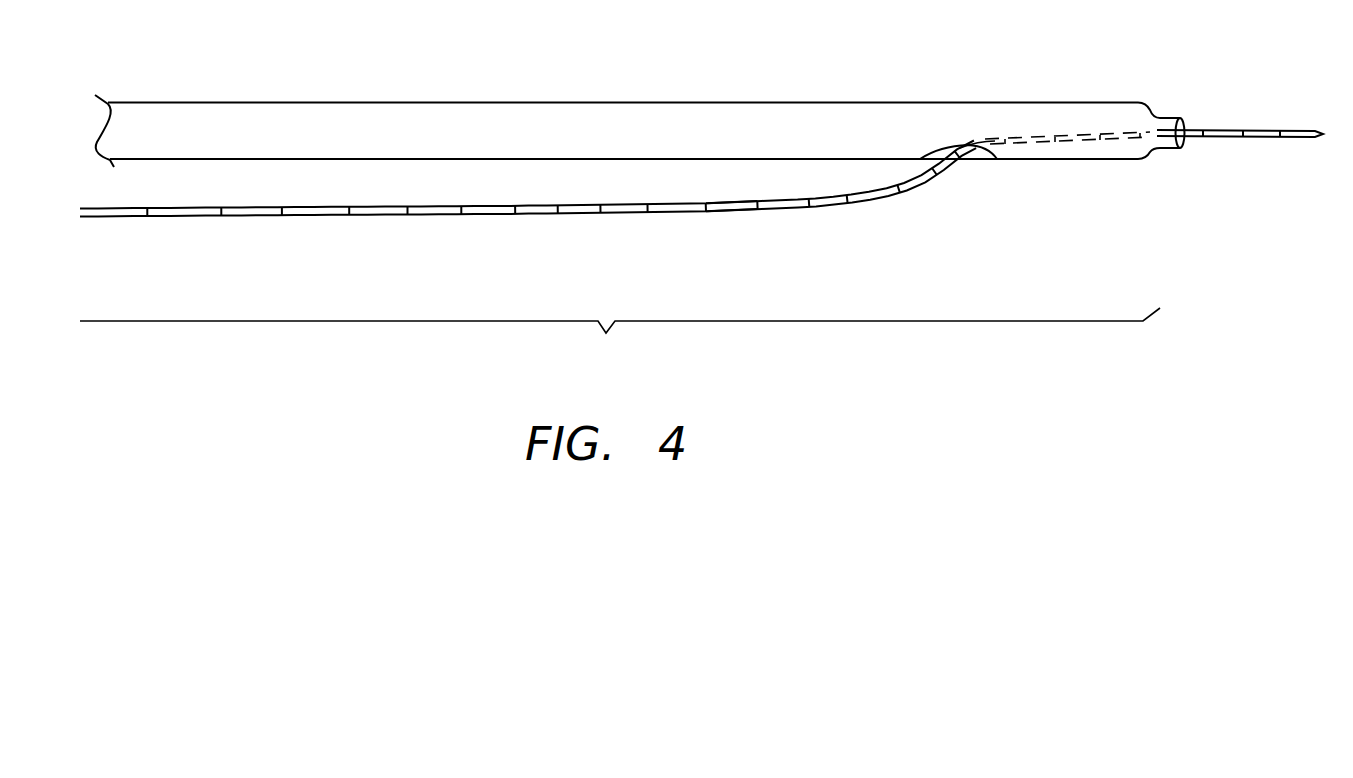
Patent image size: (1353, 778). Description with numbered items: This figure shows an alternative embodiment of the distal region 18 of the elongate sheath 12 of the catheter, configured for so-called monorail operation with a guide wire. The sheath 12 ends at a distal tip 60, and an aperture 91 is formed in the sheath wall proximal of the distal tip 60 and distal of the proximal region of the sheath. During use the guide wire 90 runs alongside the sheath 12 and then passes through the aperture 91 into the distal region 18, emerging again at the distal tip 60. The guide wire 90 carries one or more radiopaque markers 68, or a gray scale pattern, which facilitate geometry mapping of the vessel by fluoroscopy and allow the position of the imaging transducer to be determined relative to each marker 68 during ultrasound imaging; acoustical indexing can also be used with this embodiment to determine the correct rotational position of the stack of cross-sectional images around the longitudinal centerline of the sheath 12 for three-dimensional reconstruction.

The sheath 12 is at (425, 101).
The distal region 18 is at (620, 338).
The distal tip 60 is at (1184, 117).
The radiopaque marker 68 is at (760, 216).
The guide wire 90 is at (527, 218).
The aperture 91 is at (983, 158).